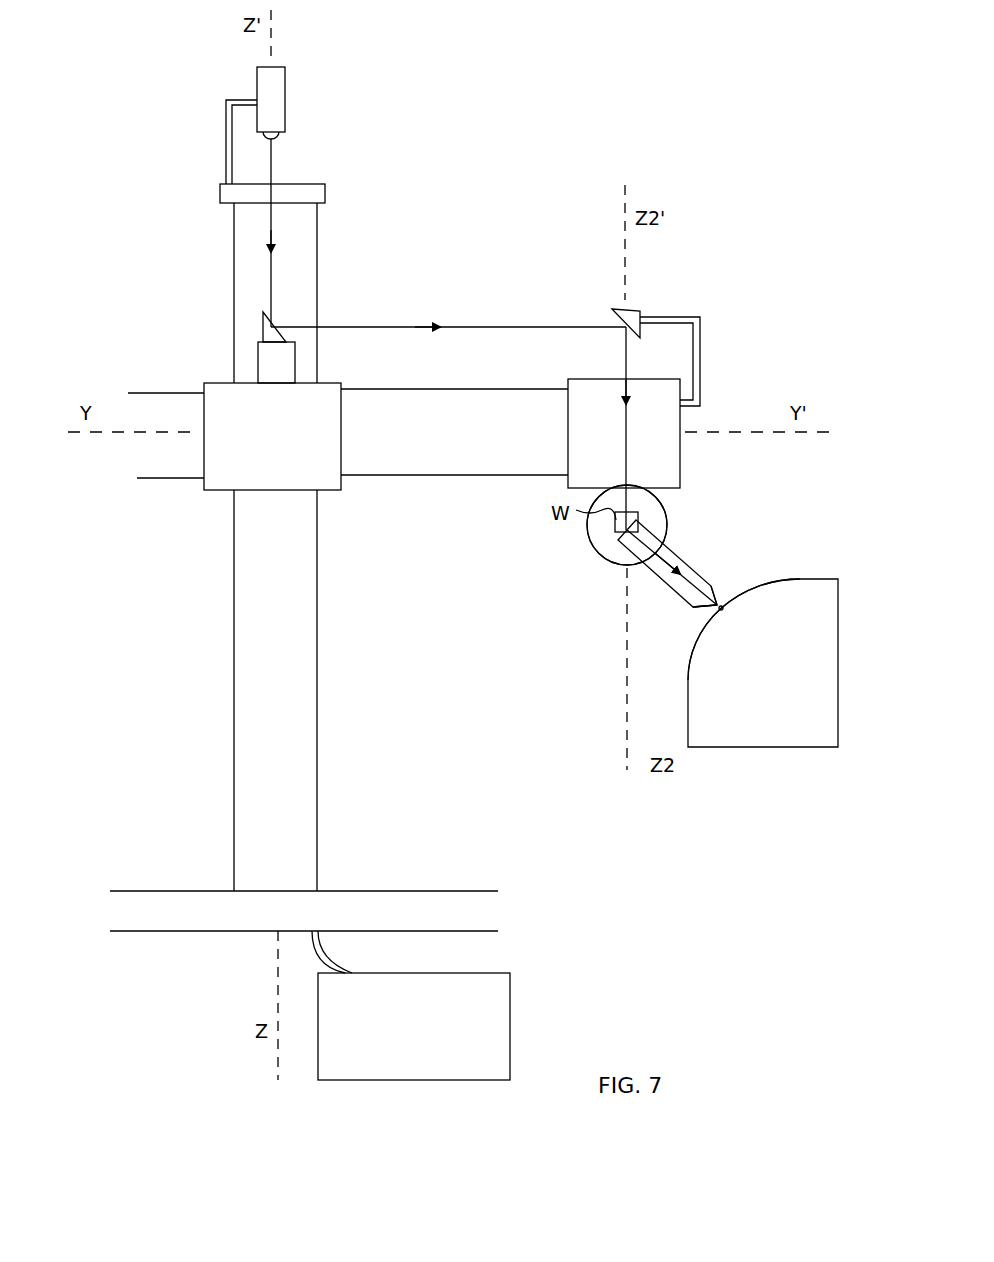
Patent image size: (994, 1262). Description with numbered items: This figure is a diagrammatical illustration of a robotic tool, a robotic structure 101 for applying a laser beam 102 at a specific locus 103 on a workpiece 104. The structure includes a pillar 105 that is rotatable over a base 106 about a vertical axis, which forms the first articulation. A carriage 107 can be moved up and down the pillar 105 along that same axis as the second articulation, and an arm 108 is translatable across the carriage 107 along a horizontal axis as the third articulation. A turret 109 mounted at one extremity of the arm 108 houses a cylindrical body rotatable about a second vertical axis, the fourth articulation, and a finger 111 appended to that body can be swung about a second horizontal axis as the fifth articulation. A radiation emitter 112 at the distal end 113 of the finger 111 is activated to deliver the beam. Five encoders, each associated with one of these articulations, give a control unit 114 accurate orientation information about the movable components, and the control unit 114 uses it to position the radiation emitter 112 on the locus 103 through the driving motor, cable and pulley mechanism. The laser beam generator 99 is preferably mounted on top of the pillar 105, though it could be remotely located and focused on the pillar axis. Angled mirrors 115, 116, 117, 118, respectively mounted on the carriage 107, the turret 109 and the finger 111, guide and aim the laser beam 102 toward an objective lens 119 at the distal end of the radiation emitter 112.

The laser beam generator 99 is at (281, 100).
The robotic structure 101 is at (422, 231).
The laser beam 102 is at (273, 147).
The locus 103 is at (723, 610).
The workpiece 104 is at (812, 580).
The pillar 105 is at (318, 636).
The base 106 is at (409, 890).
The carriage 107 is at (331, 492).
The arm 108 is at (448, 389).
The turret 109 is at (682, 455).
The finger 111 is at (681, 548).
The radiation emitter 112 is at (700, 600).
The distal end 113 is at (716, 598).
The control unit 114 is at (498, 972).
The angled mirror 115 is at (263, 330).
The angled mirror 116 is at (630, 306).
The angled mirror 117 is at (600, 553).
The angled mirror 118 is at (627, 525).
The objective lens 119 is at (725, 606).